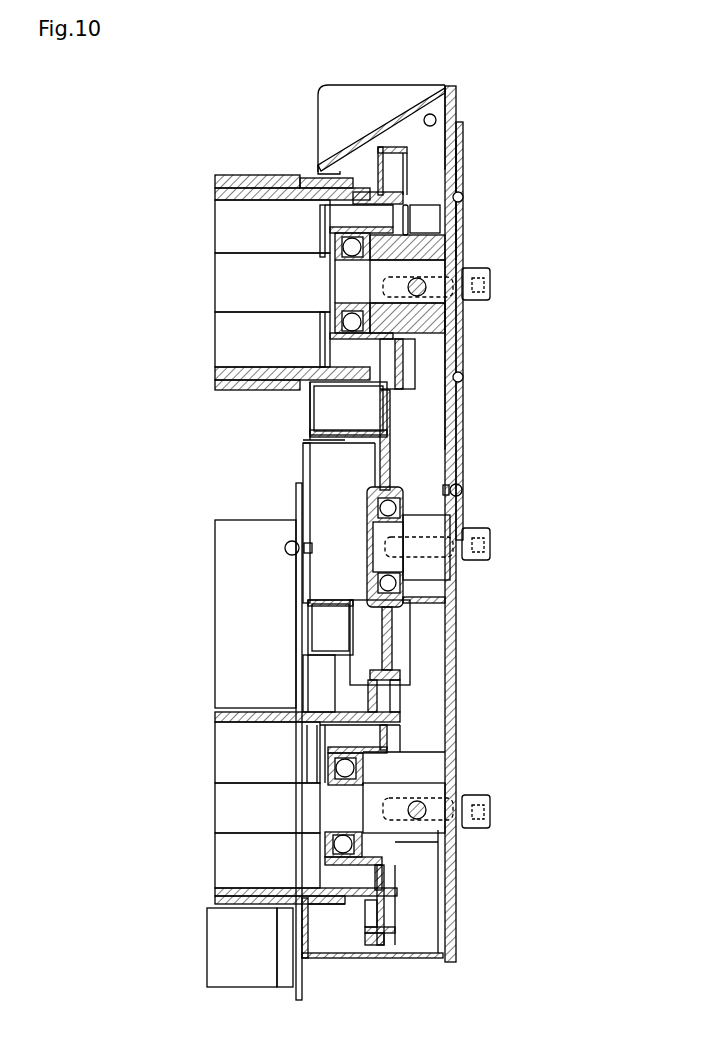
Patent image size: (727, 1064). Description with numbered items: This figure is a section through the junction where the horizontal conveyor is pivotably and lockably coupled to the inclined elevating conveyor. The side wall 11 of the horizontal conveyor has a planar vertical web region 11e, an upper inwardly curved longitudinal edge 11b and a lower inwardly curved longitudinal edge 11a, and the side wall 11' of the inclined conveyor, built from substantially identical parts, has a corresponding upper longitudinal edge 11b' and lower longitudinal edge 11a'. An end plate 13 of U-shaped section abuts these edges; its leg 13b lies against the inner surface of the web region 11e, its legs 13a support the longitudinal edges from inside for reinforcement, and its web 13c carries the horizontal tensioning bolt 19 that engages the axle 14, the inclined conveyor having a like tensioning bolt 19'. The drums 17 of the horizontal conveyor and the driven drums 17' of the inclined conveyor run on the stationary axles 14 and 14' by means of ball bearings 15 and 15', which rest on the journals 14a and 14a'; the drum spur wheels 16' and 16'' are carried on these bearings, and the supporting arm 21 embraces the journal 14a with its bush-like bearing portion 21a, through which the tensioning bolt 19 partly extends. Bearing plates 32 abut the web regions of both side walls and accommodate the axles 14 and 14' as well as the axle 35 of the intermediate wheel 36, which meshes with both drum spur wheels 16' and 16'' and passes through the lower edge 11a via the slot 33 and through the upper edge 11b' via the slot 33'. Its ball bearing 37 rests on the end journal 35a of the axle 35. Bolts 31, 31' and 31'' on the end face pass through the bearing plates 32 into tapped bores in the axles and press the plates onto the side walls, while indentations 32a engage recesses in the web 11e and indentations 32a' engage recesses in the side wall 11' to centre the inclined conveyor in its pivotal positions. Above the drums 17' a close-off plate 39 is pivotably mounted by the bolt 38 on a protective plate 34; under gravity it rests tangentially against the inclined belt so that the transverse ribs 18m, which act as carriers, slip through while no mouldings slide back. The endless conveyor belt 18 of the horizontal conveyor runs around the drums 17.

The side wall 11 is at (492, 509).
The side wall of the inclined conveyor means 11' is at (488, 807).
The lower longitudinal edge 11a is at (339, 521).
The housing 11a' is at (392, 970).
The upper longitudinal edge 11b is at (337, 116).
The upper longitudinal edge of side wall 11' 11b' is at (498, 586).
The web region 11e is at (458, 156).
The end plate 13 is at (418, 84).
The U-shaped leg 13a is at (312, 410).
The U-shaped leg 13b is at (463, 138).
The web of end plate 13c is at (370, 102).
The axle 14 is at (231, 282).
The axle of the inclined conveyor means 14' is at (227, 808).
The journal 14a is at (295, 313).
The journal 14a' is at (330, 806).
The ball bearing 15 is at (324, 272).
The ball bearing 15' is at (315, 807).
The drum spur wheel 16' is at (464, 435).
The drum spur wheel 16'' is at (387, 954).
The drum 17 is at (270, 289).
The driven drum of the inclined conveyor means 17' is at (264, 806).
The conveyor belt 18 is at (228, 177).
The transverse rib 18m is at (237, 953).
The tensioning bolt 19 is at (472, 269).
The bolt 19' is at (472, 773).
The supporting arm 21 is at (430, 220).
The bearing portion 21a is at (395, 302).
The bolt 31 is at (507, 283).
The bolt 31' is at (508, 534).
The bolt 31'' is at (520, 801).
The bearing plate 32 is at (465, 321).
The indentation 32a is at (518, 204).
The indentation 32a' is at (520, 375).
The slot 33 is at (348, 409).
The slot 33' is at (331, 656).
The protective plate 34 is at (455, 487).
The axle of intermediate wheel 35 is at (420, 516).
The end journal 35a is at (380, 540).
The intermediate wheel 36 is at (400, 640).
The ball bearing 37 is at (370, 515).
The bolt 38 is at (290, 548).
The close-off plate 39 is at (228, 640).